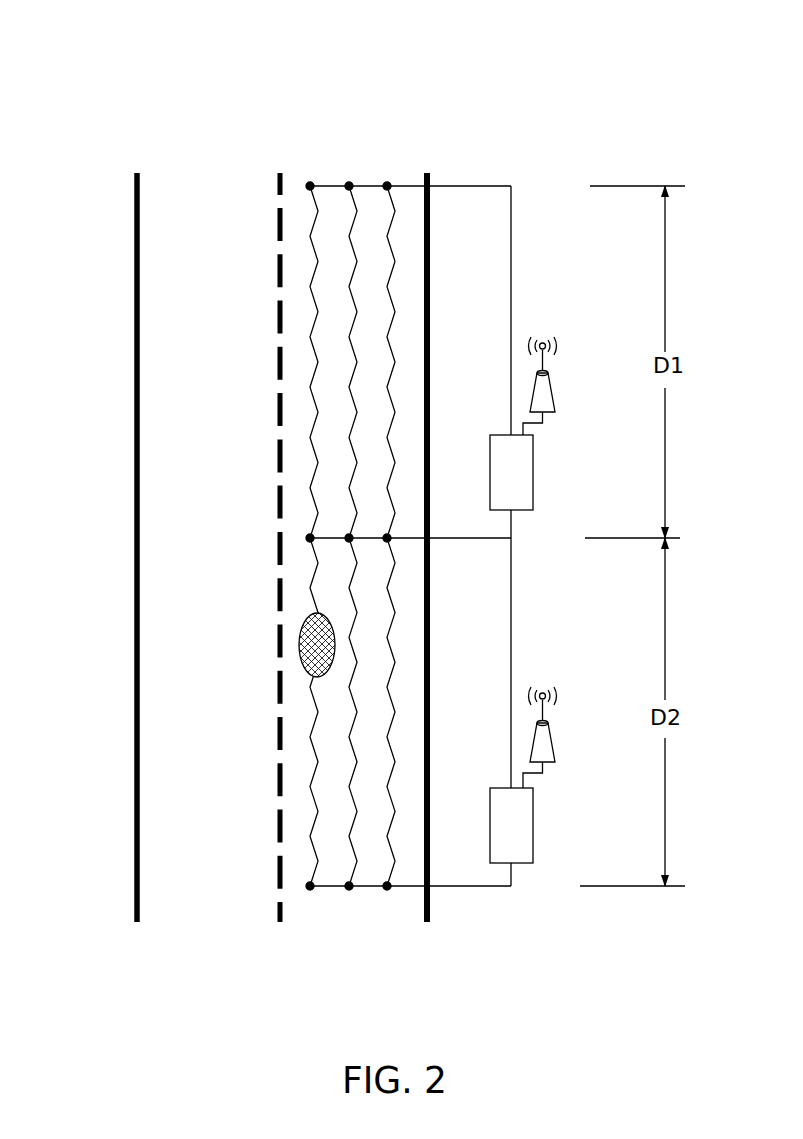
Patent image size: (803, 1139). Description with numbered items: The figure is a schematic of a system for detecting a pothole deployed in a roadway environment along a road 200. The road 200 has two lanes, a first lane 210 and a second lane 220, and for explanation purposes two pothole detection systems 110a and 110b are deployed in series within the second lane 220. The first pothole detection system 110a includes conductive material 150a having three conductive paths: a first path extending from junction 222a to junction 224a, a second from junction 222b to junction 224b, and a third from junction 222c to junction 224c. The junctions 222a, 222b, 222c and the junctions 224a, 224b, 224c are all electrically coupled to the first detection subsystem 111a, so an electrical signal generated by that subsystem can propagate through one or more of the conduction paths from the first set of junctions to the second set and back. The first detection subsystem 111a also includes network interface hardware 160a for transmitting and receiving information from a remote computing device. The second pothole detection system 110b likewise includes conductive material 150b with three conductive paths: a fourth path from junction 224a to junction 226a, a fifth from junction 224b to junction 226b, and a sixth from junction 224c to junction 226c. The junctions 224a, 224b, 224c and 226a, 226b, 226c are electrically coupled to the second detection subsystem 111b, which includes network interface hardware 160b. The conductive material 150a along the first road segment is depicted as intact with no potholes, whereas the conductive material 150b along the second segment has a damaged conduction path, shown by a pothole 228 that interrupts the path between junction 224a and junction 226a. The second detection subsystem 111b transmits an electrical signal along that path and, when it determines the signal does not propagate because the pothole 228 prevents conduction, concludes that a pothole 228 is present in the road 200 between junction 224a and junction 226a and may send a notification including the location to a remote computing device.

The road 200 is at (112, 110).
The first lane 210 is at (196, 177).
The second lane 220 is at (455, 178).
The first pothole detection system 110a is at (258, 257).
The second pothole detection system 110b is at (265, 668).
The conductive material 150a is at (403, 332).
The conductive material 150b is at (403, 668).
The junction 222a is at (305, 172).
The junction 222b is at (343, 172).
The junction 222c is at (390, 172).
The junction 224a is at (300, 528).
The junction 224b is at (340, 530).
The junction 224c is at (398, 528).
The junction 226a is at (305, 898).
The junction 226b is at (347, 898).
The junction 226c is at (390, 898).
The pothole 228 is at (295, 612).
The first detection subsystem 111a is at (533, 472).
The second detection subsystem 111b is at (533, 828).
The network interface hardware 160a is at (548, 382).
The network interface hardware 160b is at (548, 732).